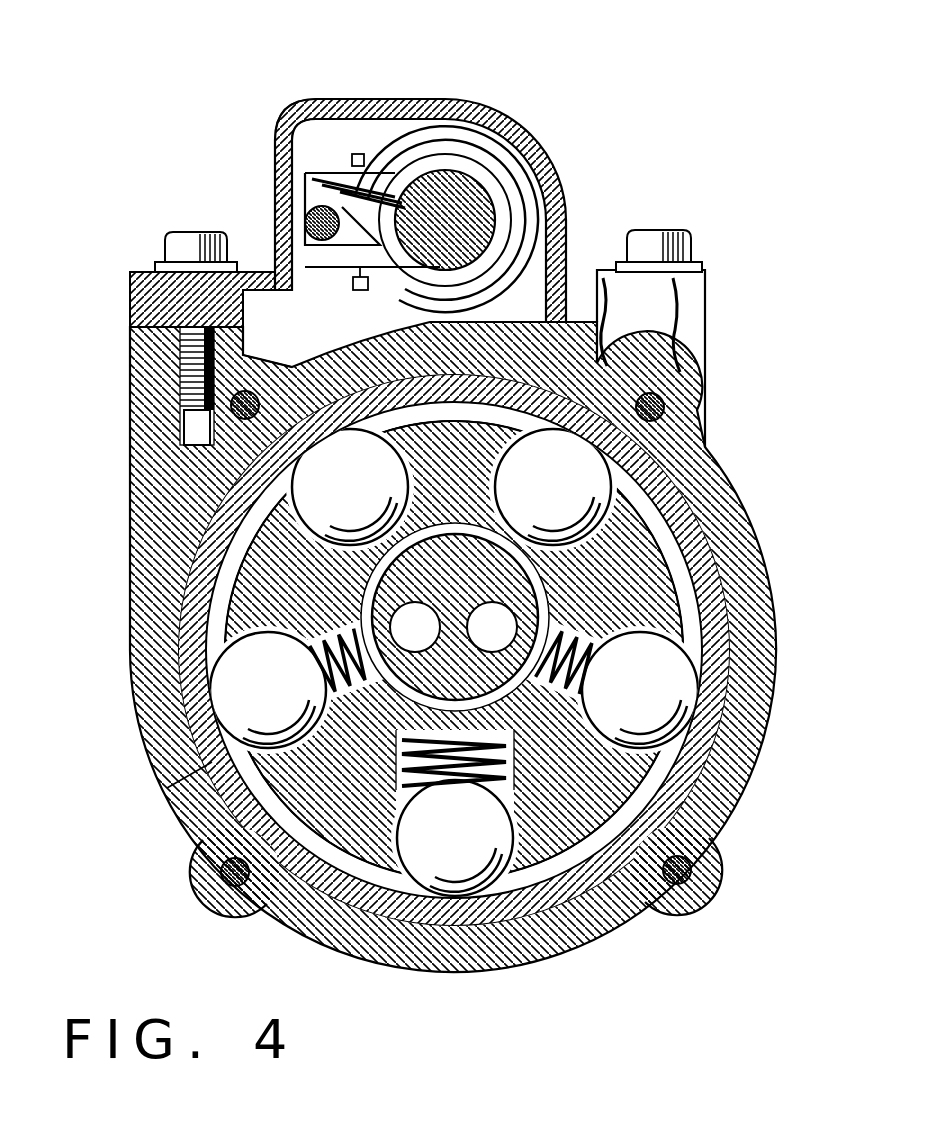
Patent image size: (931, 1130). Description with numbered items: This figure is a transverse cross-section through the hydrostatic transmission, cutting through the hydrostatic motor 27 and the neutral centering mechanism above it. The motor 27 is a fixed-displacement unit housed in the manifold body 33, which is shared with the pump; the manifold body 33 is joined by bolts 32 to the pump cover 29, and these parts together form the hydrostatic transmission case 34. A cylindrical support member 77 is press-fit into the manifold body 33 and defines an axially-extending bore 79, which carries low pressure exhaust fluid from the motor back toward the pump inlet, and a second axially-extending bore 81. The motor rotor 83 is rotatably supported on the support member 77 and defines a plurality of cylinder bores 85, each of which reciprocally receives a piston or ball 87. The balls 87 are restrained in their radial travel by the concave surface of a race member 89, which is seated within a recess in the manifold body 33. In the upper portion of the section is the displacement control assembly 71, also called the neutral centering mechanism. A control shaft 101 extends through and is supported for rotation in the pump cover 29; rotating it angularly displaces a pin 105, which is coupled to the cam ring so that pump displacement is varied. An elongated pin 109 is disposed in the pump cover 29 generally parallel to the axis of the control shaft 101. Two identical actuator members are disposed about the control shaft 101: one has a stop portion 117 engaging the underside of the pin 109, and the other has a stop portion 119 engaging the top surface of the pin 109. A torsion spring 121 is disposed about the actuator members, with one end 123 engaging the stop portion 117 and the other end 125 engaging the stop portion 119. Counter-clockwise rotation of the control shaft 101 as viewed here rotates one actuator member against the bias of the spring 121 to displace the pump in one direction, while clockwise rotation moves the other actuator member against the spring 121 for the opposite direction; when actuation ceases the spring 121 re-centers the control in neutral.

The hydrostatic motor 27 is at (183, 546).
The pump cover 29 is at (507, 126).
The bolts 32 is at (672, 228).
The manifold body 33 is at (155, 478).
The hydrostatic transmission case 34 is at (736, 330).
The displacement control assembly 71 is at (334, 133).
The cylindrical support member 77 is at (390, 729).
The axially-extending bore 79 is at (410, 621).
The axially-extending bore 81 is at (498, 626).
The motor rotor 83 is at (545, 815).
The cylinder bores 85 is at (376, 838).
The ball 87 is at (672, 690).
The race member 89 is at (167, 788).
The control shaft 101 is at (470, 212).
The pin 105 is at (640, 325).
The elongated pin 109 is at (310, 223).
The stop portion 117 is at (300, 282).
The stop portion 119 is at (283, 165).
The torsion spring 121 is at (445, 140).
The spring end 123 is at (358, 291).
The spring end 125 is at (358, 153).